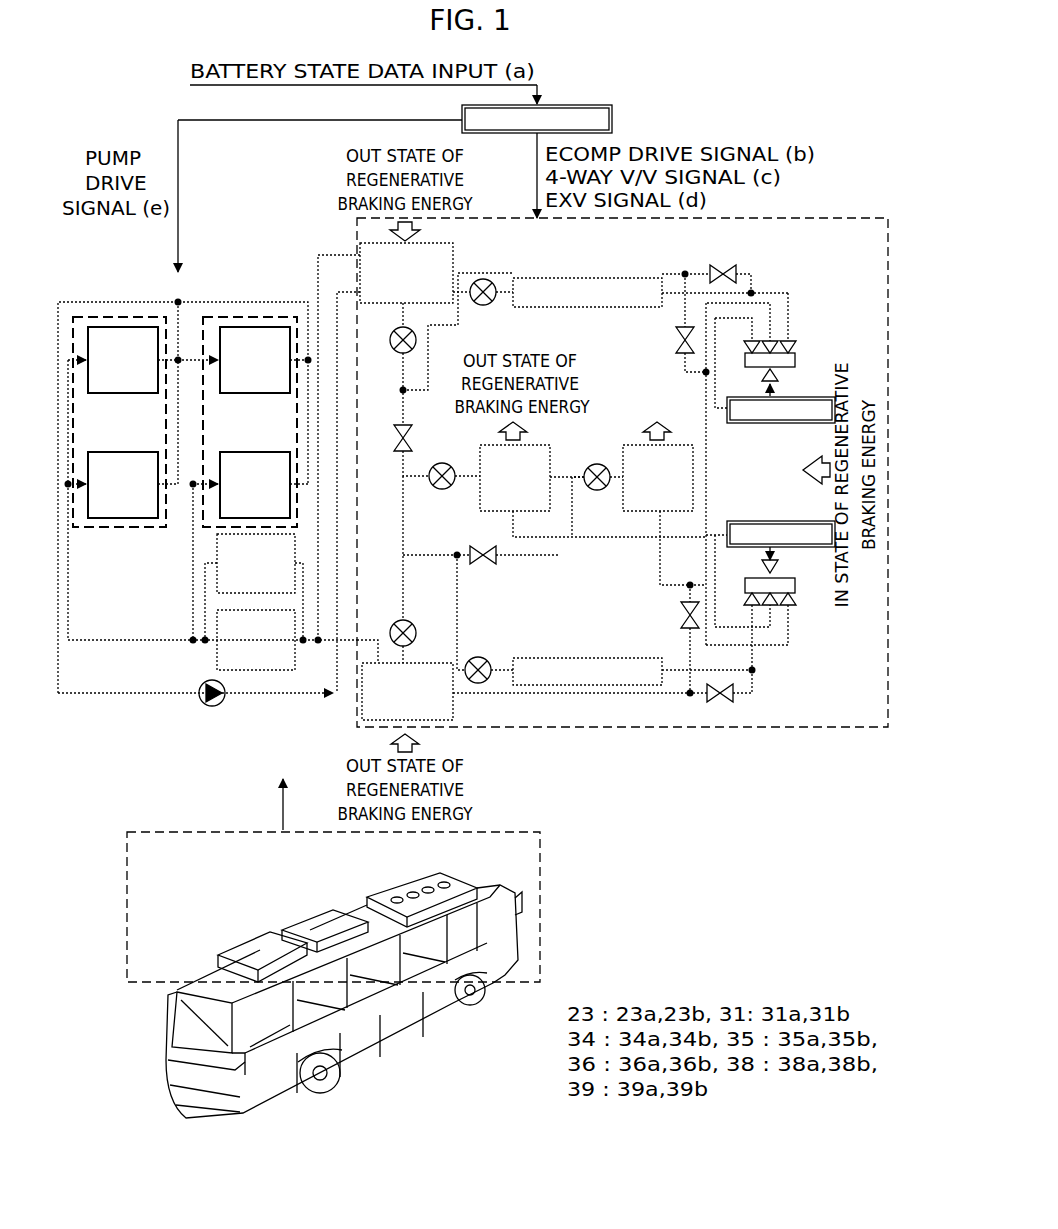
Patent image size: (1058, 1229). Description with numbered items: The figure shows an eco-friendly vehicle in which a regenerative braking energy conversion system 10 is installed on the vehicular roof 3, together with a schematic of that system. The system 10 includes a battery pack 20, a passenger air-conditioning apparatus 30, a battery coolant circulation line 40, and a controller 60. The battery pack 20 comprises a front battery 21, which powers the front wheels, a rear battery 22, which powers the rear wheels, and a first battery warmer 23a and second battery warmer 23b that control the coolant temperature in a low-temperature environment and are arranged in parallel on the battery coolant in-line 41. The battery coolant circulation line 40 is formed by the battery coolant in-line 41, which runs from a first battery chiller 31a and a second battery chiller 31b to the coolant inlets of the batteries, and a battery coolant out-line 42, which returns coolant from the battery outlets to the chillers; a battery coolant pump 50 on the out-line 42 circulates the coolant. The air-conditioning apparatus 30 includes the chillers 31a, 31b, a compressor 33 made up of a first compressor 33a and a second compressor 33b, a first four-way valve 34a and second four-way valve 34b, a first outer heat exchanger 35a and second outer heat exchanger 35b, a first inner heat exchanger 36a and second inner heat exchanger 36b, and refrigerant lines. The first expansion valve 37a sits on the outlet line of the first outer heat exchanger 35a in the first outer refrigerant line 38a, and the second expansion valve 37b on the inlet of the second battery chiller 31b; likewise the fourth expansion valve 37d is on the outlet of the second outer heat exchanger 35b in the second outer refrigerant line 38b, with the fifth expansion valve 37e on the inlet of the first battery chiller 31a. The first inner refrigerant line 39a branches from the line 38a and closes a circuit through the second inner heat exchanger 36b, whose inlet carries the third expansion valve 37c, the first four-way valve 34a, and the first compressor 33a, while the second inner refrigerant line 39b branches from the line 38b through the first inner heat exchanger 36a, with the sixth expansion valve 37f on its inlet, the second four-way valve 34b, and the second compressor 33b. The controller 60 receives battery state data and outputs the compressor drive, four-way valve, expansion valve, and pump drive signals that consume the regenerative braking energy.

The vehicular roof 3 is at (205, 973).
The regenerative braking energy conversion system 10 is at (152, 112).
The battery pack 20 is at (262, 892).
The front battery 21 is at (100, 317).
The rear battery 22 is at (232, 317).
The first battery warmer 23a is at (217, 545).
The second battery warmer 23b is at (217, 628).
The passenger air-conditioning apparatus 30 is at (815, 218).
The first battery chiller 31a is at (356, 708).
The second battery chiller 31b is at (380, 243).
The compressor 33 is at (770, 432).
The first compressor 33a is at (797, 424).
The second compressor 33b is at (808, 521).
The first 4-way valve 34a is at (796, 360).
The second 4-way valve 34b is at (796, 593).
The first outer heat exchanger 35a is at (480, 447).
The second outer heat exchanger 35b is at (635, 440).
The first inner heat exchanger 36a is at (628, 685).
The second inner heat exchanger 36b is at (588, 278).
The first expansion valve 37a is at (432, 488).
The second expansion valve 37b is at (390, 337).
The third expansion valve 37c is at (495, 280).
The fourth expansion valve 37d is at (598, 491).
The fifth expansion valve 37e is at (405, 620).
The sixth expansion valve 37f is at (482, 683).
The first outer refrigerant line 38a is at (582, 538).
The second outer refrigerant line 38b is at (660, 586).
The first inner refrigerant line 39a is at (755, 672).
The second inner refrigerant line 39b is at (755, 293).
The battery coolant circulation line 40 is at (150, 757).
The battery coolant in-line 41 is at (138, 642).
The battery coolant out-line 42 is at (87, 695).
The battery coolant pump 50 is at (214, 707).
The controller 60 is at (612, 108).